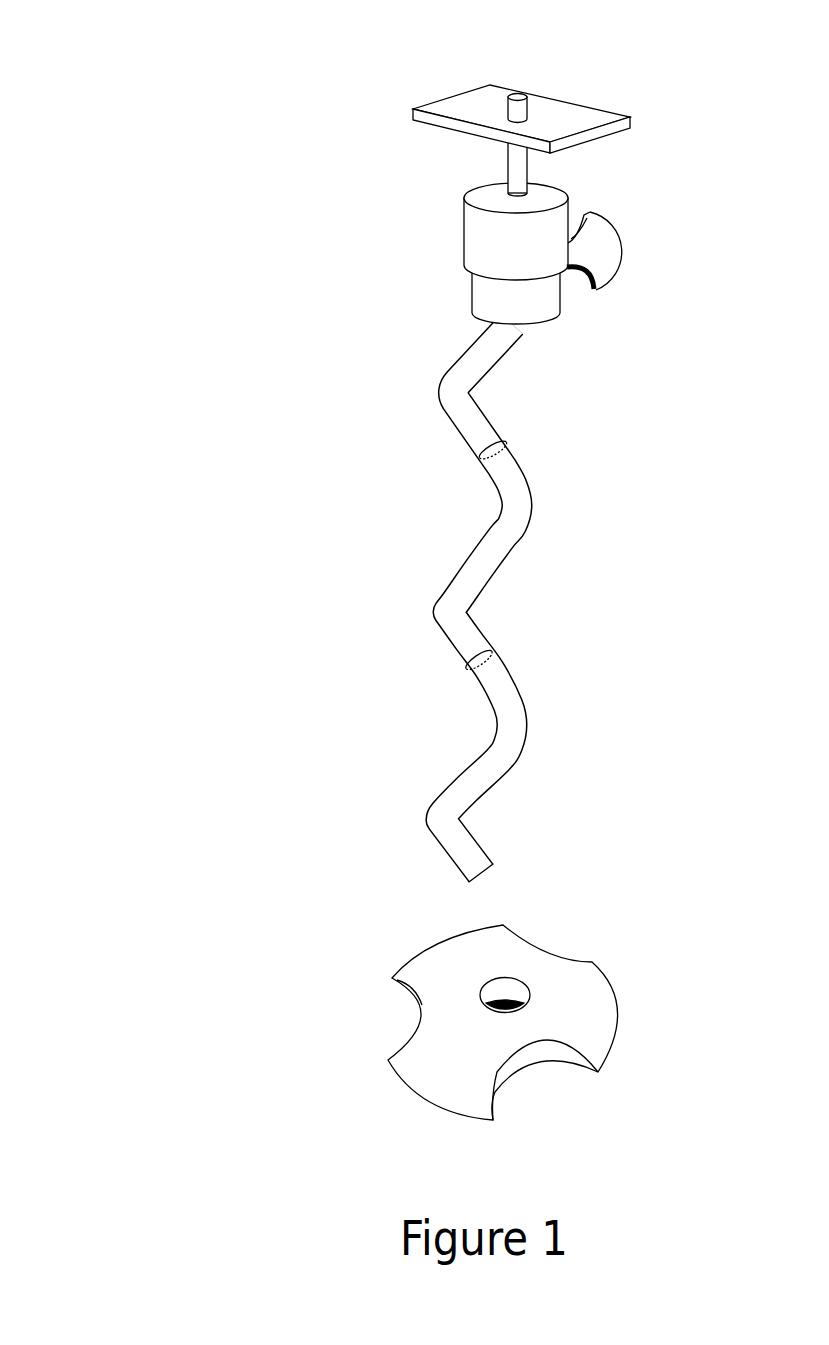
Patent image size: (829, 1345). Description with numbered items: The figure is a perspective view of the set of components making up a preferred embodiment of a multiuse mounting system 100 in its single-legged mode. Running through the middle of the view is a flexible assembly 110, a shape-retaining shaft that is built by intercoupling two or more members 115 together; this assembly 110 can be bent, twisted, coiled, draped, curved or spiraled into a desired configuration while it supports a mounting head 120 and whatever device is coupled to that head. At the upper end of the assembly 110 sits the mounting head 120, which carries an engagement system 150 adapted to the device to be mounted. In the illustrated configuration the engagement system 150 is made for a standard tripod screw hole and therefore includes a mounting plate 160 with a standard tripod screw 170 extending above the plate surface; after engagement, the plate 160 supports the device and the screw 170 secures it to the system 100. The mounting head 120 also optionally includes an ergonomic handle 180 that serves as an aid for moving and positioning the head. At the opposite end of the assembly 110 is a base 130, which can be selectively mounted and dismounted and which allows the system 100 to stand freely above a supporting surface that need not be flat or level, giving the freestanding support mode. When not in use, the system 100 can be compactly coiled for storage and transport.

The multiuse mounting system 100 is at (247, 110).
The flexible assembly 110 is at (543, 490).
The members 115 is at (475, 362).
The mounting head 120 is at (617, 282).
The base 130 is at (617, 988).
The engagement system 150 is at (395, 115).
The mounting plate 160 is at (587, 120).
The tripod screw 170 is at (520, 92).
The ergonomic handle 180 is at (603, 238).